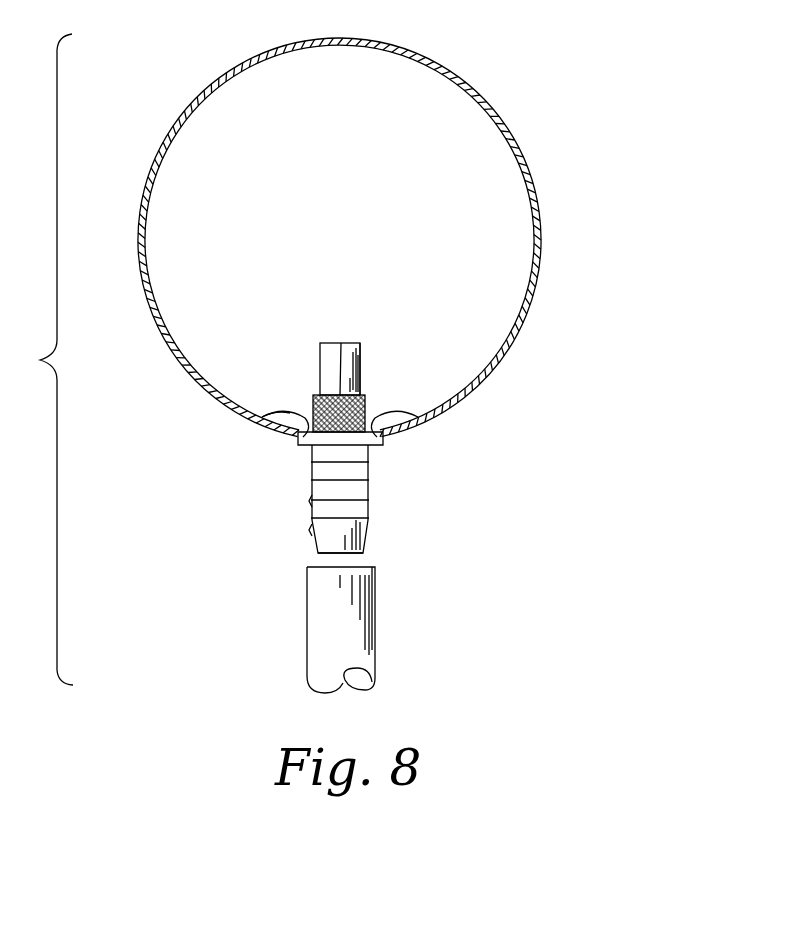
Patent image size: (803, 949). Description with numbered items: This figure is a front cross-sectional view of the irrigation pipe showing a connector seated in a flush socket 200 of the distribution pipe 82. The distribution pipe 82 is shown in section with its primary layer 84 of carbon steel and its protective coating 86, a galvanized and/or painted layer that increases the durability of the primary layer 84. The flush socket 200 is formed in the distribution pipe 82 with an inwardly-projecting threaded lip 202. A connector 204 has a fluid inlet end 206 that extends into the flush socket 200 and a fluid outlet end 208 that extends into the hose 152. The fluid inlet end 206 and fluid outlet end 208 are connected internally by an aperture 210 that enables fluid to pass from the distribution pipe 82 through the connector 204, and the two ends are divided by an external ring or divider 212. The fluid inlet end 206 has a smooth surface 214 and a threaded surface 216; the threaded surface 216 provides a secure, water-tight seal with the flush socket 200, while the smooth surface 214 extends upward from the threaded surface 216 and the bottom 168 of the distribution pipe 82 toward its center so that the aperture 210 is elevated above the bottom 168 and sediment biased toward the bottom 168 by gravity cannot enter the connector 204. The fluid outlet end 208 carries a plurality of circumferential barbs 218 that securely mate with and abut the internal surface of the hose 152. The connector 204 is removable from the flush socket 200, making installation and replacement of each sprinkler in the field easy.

The distribution pipe 82 is at (383, 235).
The primary layer 84 is at (513, 163).
The protective coating 86 is at (538, 193).
The bottom 168 is at (264, 416).
The flush socket 200 is at (351, 408).
The inwardly-projecting threaded lip 202 is at (307, 422).
The connector 204 is at (372, 497).
The fluid inlet end 206 is at (341, 343).
The fluid outlet end 208 is at (358, 558).
The aperture 210 is at (332, 343).
The external ring or divider 212 is at (300, 443).
The smooth surface 214 is at (361, 355).
The threaded surface 216 is at (366, 403).
The circumferential barbs 218 is at (312, 498).
The hose 152 is at (376, 623).